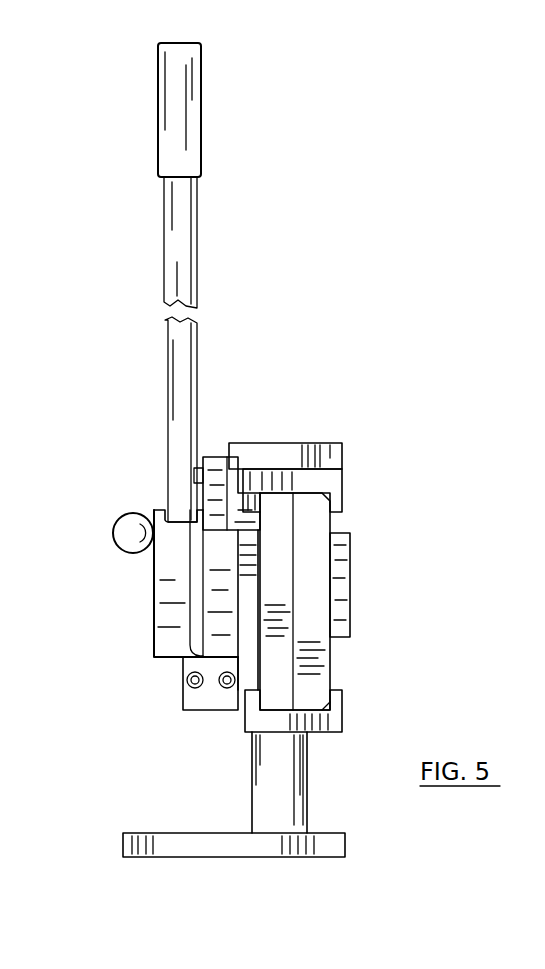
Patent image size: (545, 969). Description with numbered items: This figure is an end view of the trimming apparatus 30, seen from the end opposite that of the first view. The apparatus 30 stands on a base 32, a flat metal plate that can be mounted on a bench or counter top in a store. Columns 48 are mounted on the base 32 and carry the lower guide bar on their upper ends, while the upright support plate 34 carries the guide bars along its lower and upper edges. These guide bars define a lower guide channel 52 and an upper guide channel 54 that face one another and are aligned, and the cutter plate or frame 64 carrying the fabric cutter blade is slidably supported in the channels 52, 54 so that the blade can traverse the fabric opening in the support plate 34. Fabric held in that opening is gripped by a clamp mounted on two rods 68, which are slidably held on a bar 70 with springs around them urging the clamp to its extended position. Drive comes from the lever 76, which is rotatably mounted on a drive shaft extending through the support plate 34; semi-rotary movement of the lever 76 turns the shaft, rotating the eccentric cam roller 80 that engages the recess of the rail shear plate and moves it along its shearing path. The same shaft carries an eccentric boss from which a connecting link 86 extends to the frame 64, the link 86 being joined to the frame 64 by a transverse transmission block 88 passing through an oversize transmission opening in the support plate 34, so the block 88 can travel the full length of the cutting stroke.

The trimming apparatus 30 is at (292, 423).
The base 32 is at (221, 857).
The support plate 34 is at (285, 585).
The columns 48 is at (270, 795).
The lower guide channel 52 is at (345, 708).
The upper guide channel 54 is at (343, 488).
The cutter plate or frame 64 is at (353, 601).
The rods 68 is at (223, 690).
The bar 70 is at (222, 594).
The lever 76 is at (190, 222).
The eccentric cam roller 80 is at (352, 570).
The connecting link 86 is at (215, 465).
The transverse transmission block 88 is at (233, 527).